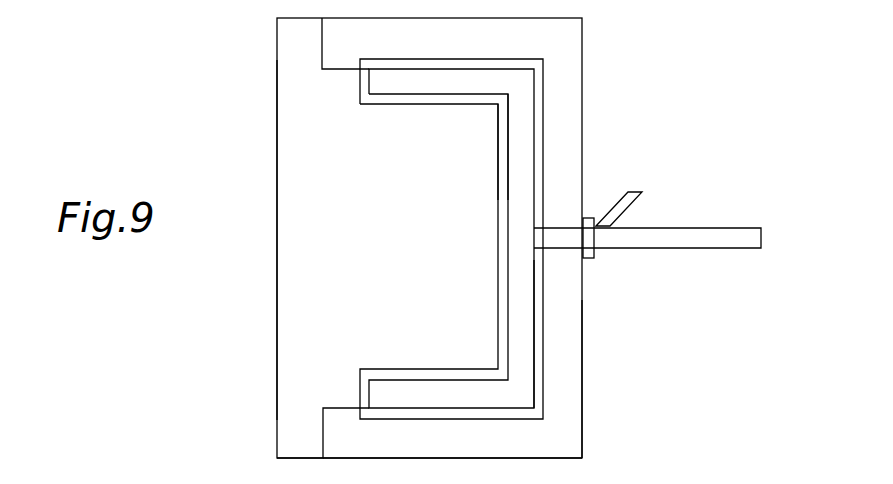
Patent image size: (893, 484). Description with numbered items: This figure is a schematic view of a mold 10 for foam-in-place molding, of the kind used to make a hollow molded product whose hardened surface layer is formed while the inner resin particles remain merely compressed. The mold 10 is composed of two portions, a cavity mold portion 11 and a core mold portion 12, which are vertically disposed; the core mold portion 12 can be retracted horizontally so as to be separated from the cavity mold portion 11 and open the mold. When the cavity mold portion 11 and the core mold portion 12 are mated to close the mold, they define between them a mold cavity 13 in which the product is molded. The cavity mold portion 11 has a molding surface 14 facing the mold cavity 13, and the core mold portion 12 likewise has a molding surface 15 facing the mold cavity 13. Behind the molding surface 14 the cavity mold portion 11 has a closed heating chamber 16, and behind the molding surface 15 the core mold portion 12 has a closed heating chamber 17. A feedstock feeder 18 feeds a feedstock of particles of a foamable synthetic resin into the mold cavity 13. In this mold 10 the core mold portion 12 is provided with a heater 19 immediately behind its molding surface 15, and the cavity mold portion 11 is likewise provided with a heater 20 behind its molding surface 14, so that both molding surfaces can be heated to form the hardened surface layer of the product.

The mold 10 is at (276, 87).
The cavity mold portion 11 is at (584, 387).
The core mold portion 12 is at (277, 383).
The mold cavity 13 is at (513, 243).
The molding surface 14 is at (532, 162).
The molding surface 15 is at (508, 138).
The closed heating chamber 16 is at (562, 443).
The closed heating chamber 17 is at (294, 448).
The feedstock feeder 18 is at (715, 238).
The heater 19 is at (498, 323).
The heater 20 is at (540, 315).